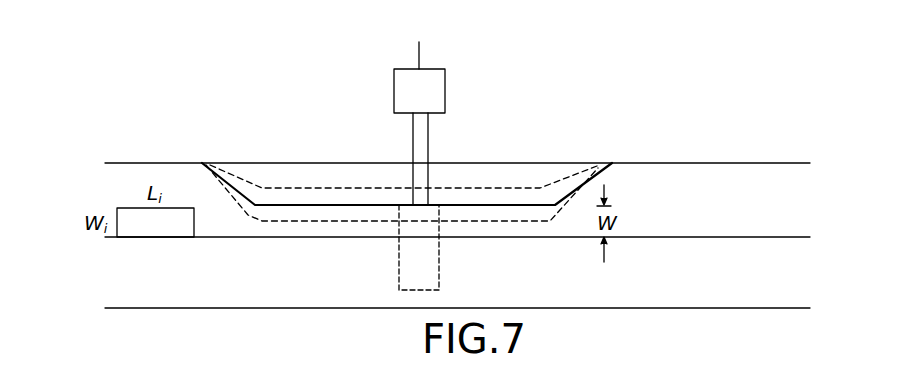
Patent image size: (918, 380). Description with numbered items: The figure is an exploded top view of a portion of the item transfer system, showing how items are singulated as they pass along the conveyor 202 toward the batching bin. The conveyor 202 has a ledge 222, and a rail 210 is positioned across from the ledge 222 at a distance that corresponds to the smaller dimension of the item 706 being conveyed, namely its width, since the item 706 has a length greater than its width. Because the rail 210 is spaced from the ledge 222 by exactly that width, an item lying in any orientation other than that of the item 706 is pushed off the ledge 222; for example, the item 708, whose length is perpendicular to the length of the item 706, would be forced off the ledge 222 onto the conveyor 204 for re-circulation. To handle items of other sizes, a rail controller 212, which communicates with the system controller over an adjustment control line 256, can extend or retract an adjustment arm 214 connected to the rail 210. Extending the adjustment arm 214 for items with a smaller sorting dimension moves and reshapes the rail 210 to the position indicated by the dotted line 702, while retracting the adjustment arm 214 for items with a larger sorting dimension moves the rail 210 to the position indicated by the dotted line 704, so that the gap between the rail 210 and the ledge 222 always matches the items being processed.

The conveyor 202 is at (690, 163).
The conveyor 204 is at (698, 298).
The rail 210 is at (588, 175).
The rail controller 212 is at (445, 95).
The adjustment arm 214 is at (428, 140).
The ledge 222 is at (225, 237).
The adjustment control line 256 is at (419, 54).
The dotted line 702 is at (270, 222).
The dotted line 704 is at (288, 190).
The item 706 is at (143, 228).
The item 708 is at (441, 278).